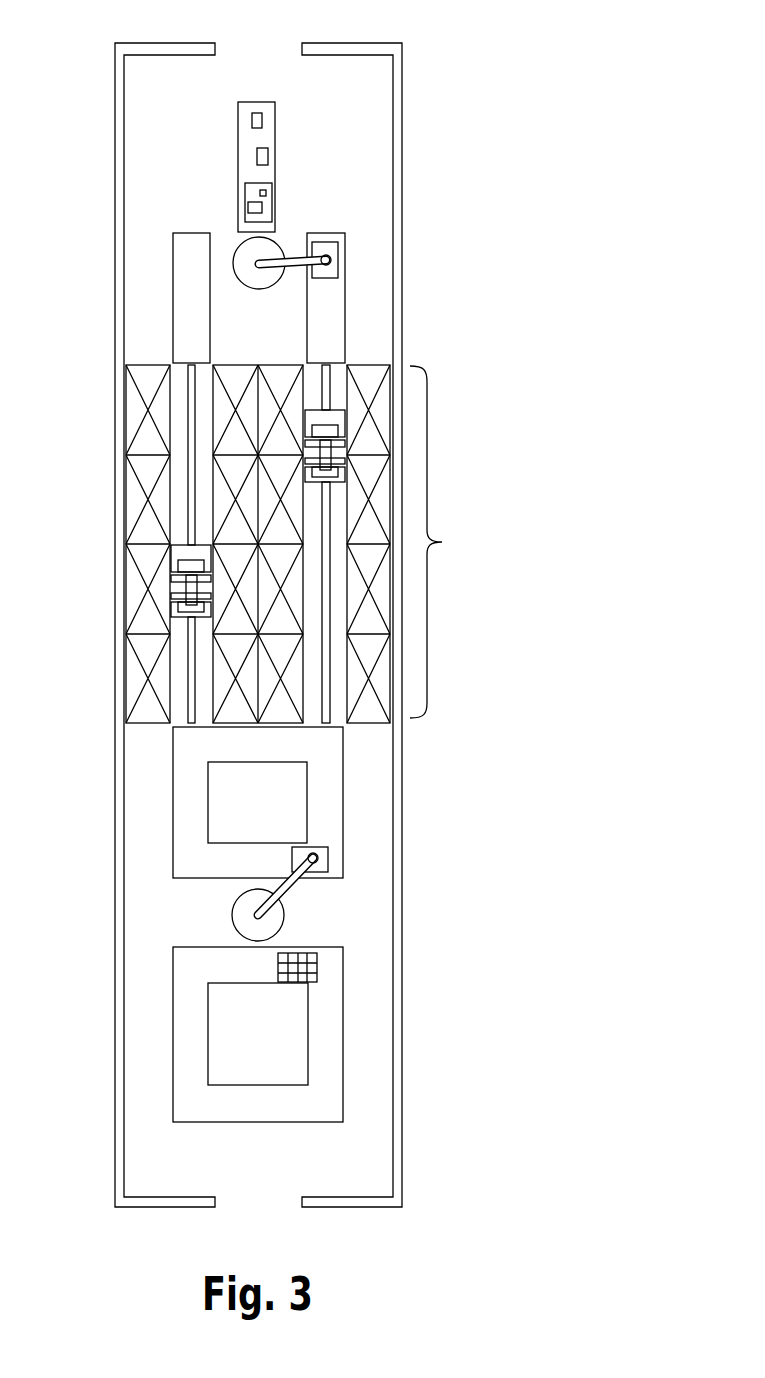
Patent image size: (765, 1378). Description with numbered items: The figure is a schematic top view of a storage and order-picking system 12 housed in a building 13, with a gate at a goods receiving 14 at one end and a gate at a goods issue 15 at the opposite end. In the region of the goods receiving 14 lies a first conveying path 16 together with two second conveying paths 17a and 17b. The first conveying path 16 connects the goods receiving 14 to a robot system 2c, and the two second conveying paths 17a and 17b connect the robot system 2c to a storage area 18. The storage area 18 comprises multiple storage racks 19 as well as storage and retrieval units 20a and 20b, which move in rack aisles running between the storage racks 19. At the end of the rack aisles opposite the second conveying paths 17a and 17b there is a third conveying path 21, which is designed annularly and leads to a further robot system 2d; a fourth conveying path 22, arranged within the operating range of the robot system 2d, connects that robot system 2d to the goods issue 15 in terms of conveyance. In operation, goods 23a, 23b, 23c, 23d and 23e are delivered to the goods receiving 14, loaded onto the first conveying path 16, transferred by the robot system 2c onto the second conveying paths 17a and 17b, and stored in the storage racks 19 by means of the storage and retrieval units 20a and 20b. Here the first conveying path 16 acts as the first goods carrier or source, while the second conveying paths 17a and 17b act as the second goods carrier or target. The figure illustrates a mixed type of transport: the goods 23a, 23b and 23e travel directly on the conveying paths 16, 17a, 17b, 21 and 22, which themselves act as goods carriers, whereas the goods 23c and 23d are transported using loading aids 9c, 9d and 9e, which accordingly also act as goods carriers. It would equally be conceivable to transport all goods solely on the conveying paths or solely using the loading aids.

The storage and order-picking system 12 is at (503, 367).
The building 13 is at (118, 835).
The goods receiving 14 is at (275, 40).
The goods issue 15 is at (270, 1207).
The first conveying path 16 is at (267, 115).
The second conveying path 17a is at (185, 300).
The second conveying path 17b is at (322, 323).
The storage area 18 is at (449, 542).
The storage racks 19 is at (135, 407).
The storage and retrieval unit 20a is at (172, 543).
The storage and retrieval unit 20b is at (332, 420).
The third conveying path 21 is at (327, 790).
The fourth conveying path 22 is at (327, 1050).
The robot system 2c is at (257, 280).
The robot system 2d is at (243, 922).
The loading aid 9c is at (247, 188).
The loading aid 9d is at (335, 247).
The loading aid 9e is at (333, 870).
The goods 23a is at (252, 118).
The goods 23b is at (270, 152).
The goods 23c is at (272, 190).
The goods 23d is at (248, 206).
The goods 23e is at (317, 970).